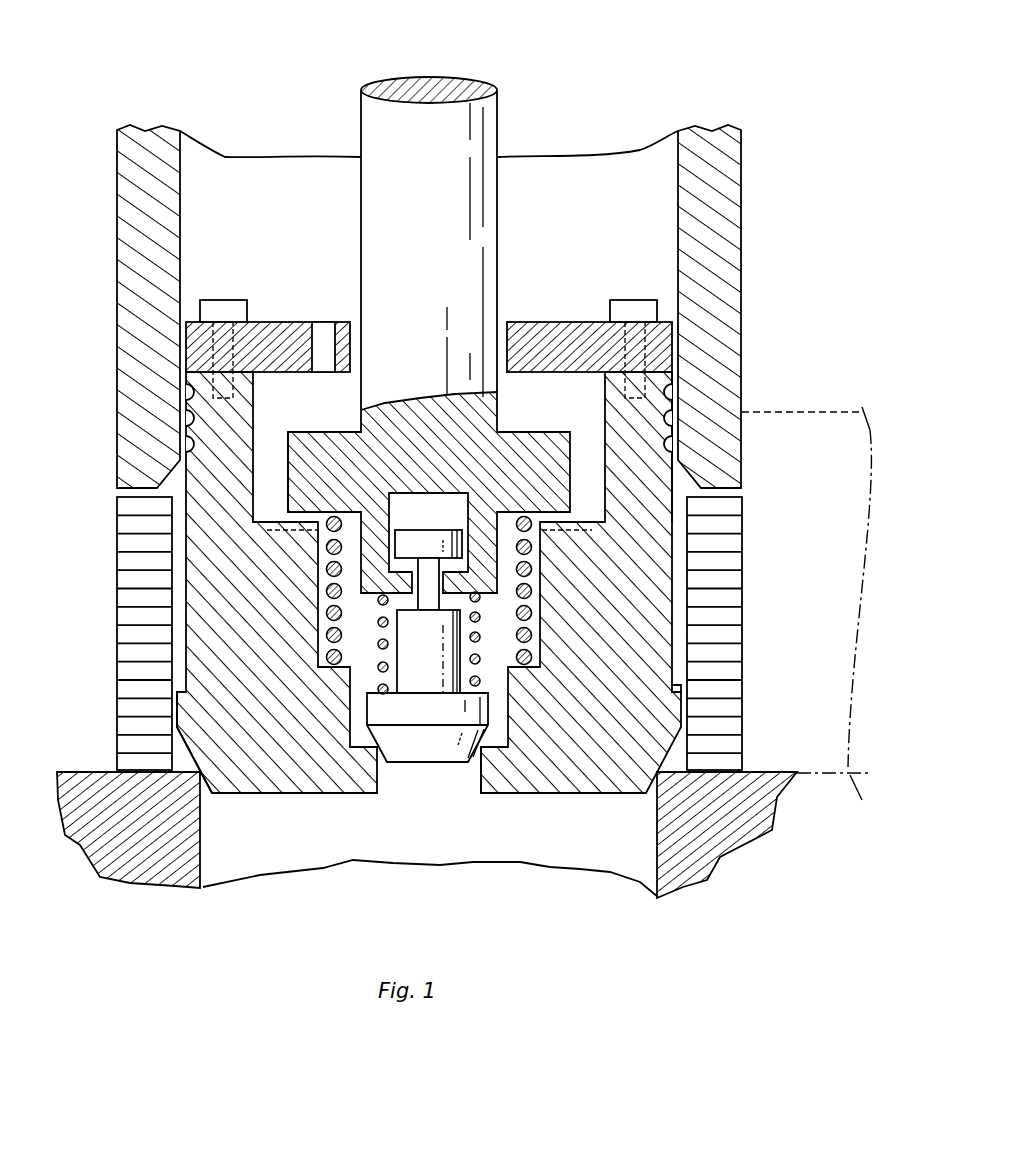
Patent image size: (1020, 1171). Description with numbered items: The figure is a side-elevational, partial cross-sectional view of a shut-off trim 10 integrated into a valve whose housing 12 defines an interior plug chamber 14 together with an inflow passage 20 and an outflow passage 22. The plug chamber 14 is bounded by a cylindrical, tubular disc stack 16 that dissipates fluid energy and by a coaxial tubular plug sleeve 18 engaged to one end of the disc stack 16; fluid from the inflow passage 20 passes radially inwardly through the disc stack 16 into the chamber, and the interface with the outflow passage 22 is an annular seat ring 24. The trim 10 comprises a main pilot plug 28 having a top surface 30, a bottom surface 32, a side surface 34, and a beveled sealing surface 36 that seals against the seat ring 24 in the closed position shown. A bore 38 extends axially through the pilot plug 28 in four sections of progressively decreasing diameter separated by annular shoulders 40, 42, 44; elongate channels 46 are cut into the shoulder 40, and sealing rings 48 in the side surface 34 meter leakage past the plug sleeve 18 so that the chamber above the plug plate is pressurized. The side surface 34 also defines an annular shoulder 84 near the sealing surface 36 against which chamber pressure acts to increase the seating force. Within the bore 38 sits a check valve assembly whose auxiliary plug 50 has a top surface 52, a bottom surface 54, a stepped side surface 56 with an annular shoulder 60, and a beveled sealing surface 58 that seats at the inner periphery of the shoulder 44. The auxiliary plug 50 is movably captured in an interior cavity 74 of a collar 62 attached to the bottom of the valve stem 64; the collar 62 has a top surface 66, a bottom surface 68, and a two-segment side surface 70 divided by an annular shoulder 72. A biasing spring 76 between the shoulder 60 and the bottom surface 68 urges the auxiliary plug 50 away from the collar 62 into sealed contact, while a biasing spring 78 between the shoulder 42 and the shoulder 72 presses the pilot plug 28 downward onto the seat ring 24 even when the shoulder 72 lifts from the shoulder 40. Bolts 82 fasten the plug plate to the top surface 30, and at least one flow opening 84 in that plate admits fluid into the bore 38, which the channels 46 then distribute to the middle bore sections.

The shut-off trim 10 is at (660, 56).
The housing 12 is at (751, 172).
The plug chamber 14 is at (200, 197).
The disc stack 16 is at (725, 597).
The plug sleeve 18 is at (725, 223).
The inflow passage 20 is at (768, 412).
The outflow passage 22 is at (333, 845).
The seat ring 24 is at (132, 862).
The main pilot plug 28 is at (603, 770).
The top surface 30 is at (525, 320).
The bottom surface 32 is at (257, 795).
The side surface 34 is at (674, 484).
The beveled sealing surface 36 is at (200, 748).
The bore 38 is at (531, 406).
The annular shoulder 40 is at (280, 516).
The annular shoulder 42 is at (317, 655).
The annular shoulder 44 is at (348, 735).
The channels 46 is at (580, 522).
The sealing rings 48 is at (190, 443).
The auxiliary plug 50 is at (407, 716).
The top surface 52 is at (417, 530).
The bottom surface 54 is at (440, 763).
The side surface 56 is at (413, 646).
The beveled sealing surface 58 is at (540, 712).
The annular shoulder 60 is at (373, 692).
The collar 62 is at (292, 436).
The stem 64 is at (414, 191).
The top surface 66 is at (326, 433).
The bottom surface 68 is at (472, 596).
The side surface 70 is at (287, 476).
The annular shoulder 72 is at (556, 524).
The interior cavity 74 is at (450, 507).
The biasing spring 76 is at (480, 663).
The biasing spring 78 is at (327, 567).
The bolts 82 is at (217, 300).
The flow opening / annular shoulder 84 is at (327, 330).